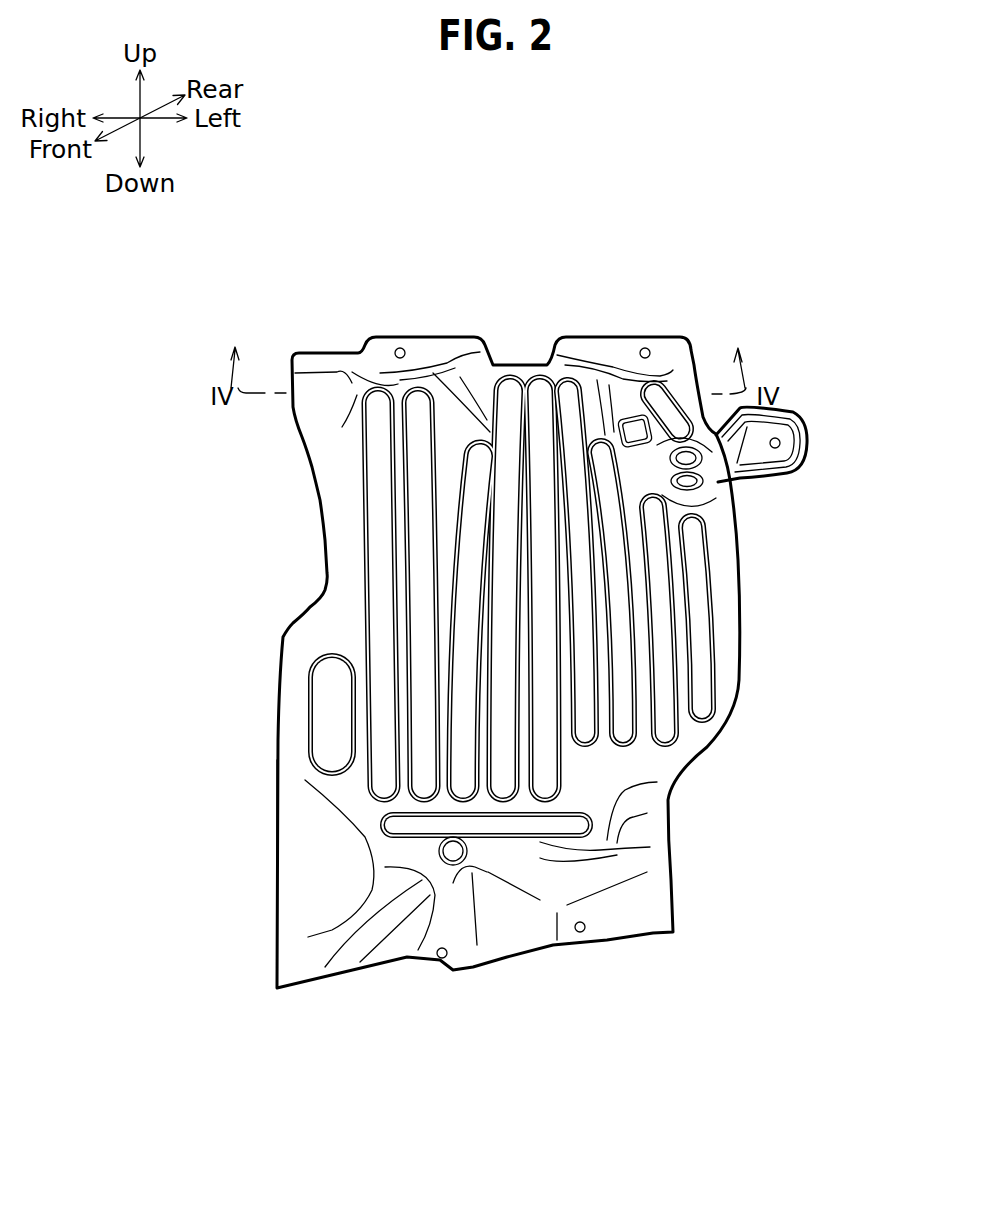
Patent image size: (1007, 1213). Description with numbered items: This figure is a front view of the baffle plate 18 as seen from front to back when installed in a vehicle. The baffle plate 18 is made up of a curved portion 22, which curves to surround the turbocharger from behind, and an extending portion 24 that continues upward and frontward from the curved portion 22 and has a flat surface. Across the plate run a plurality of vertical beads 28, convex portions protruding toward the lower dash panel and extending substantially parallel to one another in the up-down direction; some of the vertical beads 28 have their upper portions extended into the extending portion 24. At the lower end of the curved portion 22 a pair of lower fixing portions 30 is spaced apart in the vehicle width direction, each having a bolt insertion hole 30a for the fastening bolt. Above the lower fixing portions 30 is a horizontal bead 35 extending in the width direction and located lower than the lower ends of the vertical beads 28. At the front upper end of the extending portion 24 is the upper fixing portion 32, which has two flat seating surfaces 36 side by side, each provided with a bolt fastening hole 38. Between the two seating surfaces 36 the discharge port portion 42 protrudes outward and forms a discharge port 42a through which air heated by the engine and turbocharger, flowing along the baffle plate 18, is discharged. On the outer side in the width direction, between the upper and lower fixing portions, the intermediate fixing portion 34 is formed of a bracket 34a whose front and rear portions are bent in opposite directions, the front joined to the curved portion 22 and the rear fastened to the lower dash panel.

The baffle plate 18 is at (785, 592).
The curved portion 22 is at (276, 824).
The extending portion 24 is at (300, 438).
The vertical beads 28 is at (540, 693).
The lower fixing portion 30 is at (439, 977).
The bolt insertion hole 30a is at (447, 958).
The upper fixing portion 32 is at (417, 321).
The intermediate fixing portion 34 is at (798, 413).
The bracket 34a is at (781, 449).
The horizontal bead 35 is at (503, 830).
The seating surface 36 is at (433, 352).
The bolt fastening hole 38 is at (398, 348).
The discharge port portion 42 is at (507, 389).
The discharge port 42a is at (518, 366).